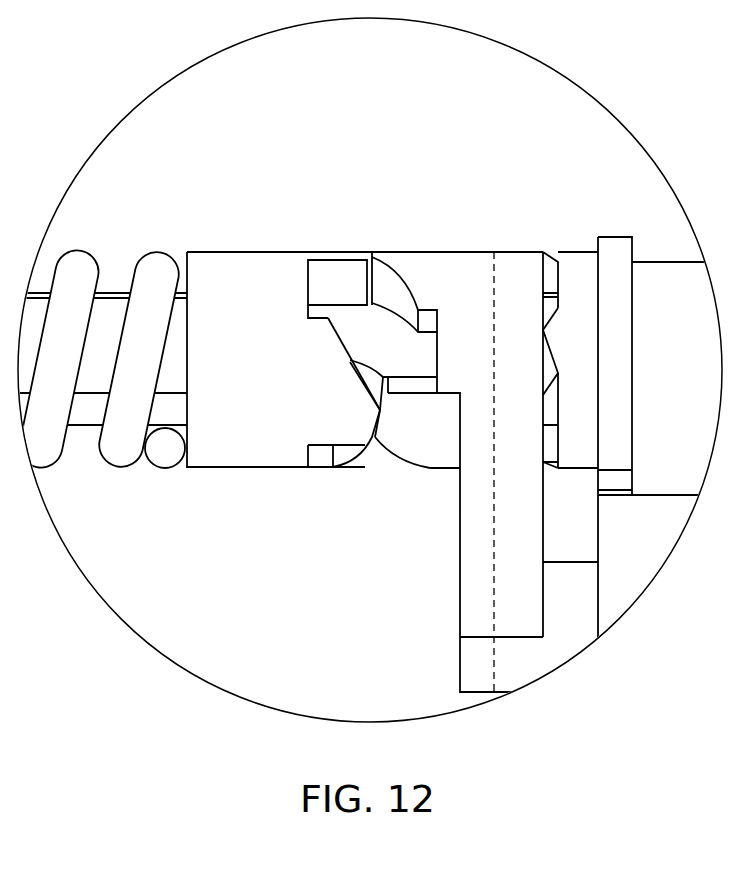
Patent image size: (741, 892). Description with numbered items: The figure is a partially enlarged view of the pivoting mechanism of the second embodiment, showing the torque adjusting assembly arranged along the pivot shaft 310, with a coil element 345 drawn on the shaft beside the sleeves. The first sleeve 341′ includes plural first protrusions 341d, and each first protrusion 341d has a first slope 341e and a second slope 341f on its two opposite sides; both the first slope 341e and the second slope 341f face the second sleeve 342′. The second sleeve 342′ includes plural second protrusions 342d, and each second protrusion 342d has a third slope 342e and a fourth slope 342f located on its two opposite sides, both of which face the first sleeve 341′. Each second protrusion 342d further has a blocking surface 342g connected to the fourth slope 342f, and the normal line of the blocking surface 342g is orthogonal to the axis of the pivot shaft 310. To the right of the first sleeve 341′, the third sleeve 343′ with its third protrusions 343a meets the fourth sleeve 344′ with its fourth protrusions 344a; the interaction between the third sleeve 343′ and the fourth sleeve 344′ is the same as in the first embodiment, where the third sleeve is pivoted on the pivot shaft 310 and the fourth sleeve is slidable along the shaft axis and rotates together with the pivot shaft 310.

The pivot shaft 310 is at (113, 308).
The spring 345 is at (157, 273).
The second sleeve 342′ is at (237, 433).
The second protrusion 342d is at (374, 408).
The third slope 342e is at (347, 340).
The fourth slope 342f is at (374, 445).
The blocking surface 342g is at (339, 279).
The first sleeve 341′ is at (461, 268).
The first protrusion 341d is at (386, 430).
The first slope 341e is at (383, 377).
The second slope 341f is at (397, 466).
The third sleeve 343′ is at (521, 268).
The third protrusion 343a is at (546, 373).
The fourth sleeve 344′ is at (578, 268).
The fourth protrusion 344a is at (550, 333).